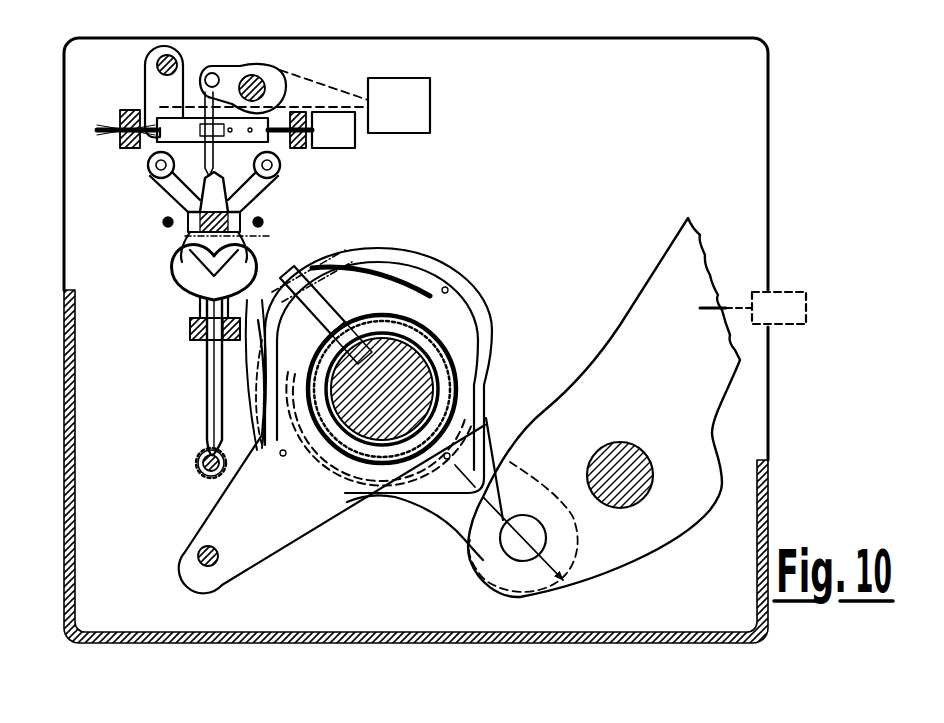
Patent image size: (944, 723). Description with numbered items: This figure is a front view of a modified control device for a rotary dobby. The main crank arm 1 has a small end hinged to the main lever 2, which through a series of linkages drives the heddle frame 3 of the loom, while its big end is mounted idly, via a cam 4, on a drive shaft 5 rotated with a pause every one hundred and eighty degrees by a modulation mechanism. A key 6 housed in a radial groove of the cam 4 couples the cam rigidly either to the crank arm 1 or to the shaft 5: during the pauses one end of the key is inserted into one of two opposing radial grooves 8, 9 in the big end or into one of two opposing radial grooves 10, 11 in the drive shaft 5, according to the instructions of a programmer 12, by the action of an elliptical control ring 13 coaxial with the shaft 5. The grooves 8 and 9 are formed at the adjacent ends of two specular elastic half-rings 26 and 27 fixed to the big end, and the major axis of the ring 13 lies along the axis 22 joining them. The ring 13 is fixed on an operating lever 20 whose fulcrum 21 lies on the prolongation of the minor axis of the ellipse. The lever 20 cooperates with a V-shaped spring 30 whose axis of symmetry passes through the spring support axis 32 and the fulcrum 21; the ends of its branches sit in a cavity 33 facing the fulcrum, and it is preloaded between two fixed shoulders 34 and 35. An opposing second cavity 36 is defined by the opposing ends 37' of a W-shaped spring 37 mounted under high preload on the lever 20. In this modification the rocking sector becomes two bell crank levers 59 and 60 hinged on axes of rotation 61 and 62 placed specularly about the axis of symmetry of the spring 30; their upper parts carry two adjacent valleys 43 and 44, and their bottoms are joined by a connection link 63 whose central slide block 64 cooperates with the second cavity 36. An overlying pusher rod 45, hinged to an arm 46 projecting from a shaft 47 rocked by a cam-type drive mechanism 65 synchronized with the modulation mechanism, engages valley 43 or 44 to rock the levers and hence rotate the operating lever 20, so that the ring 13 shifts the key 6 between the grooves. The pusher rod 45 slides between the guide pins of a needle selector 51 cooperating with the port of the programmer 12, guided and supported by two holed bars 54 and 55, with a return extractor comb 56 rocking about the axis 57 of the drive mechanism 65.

The main crank arm 1 is at (446, 506).
The main lever 2 is at (636, 566).
The heddle frame 3 is at (760, 298).
The cam 4 is at (375, 250).
The drive shaft 5 is at (300, 420).
The key 6 is at (318, 332).
The radial groove 8 is at (286, 280).
The radial groove 9 is at (450, 443).
The radial groove 10 is at (353, 378).
The radial groove 11 is at (412, 403).
The programmer 12 is at (355, 138).
The control ring 13 is at (355, 322).
The operating lever 20 is at (268, 545).
The fulcrum 21 is at (197, 557).
The axis 22 is at (602, 616).
The elastic half-ring 26 is at (432, 280).
The elastic half-ring 27 is at (345, 487).
The V-shaped spring 30 is at (196, 462).
The spring support axis 32 is at (205, 470).
The cavity 33 is at (205, 340).
The fixed shoulder 34 is at (216, 345).
The fixed shoulder 35 is at (240, 420).
The second cavity 36 is at (188, 258).
The W-shaped spring 37 is at (163, 301).
The opposing end of W-shaped spring 37' is at (132, 272).
The valley 43 is at (170, 224).
The valley 44 is at (255, 224).
The pusher rod 45 is at (200, 160).
The arm 46 is at (232, 80).
The shaft 47 is at (253, 82).
The needle selector 51 is at (228, 135).
The holed bar 54 is at (128, 118).
The holed bar 55 is at (303, 142).
The return extractor comb 56 is at (153, 88).
The axis 57 is at (167, 60).
The bell crank lever 59 is at (190, 184).
The bell crank lever 60 is at (242, 186).
The axis of rotation 61 is at (156, 168).
The axis of rotation 62 is at (272, 168).
The connection link 63 is at (185, 234).
The slide block 64 is at (190, 330).
The drive mechanism 65 is at (418, 103).